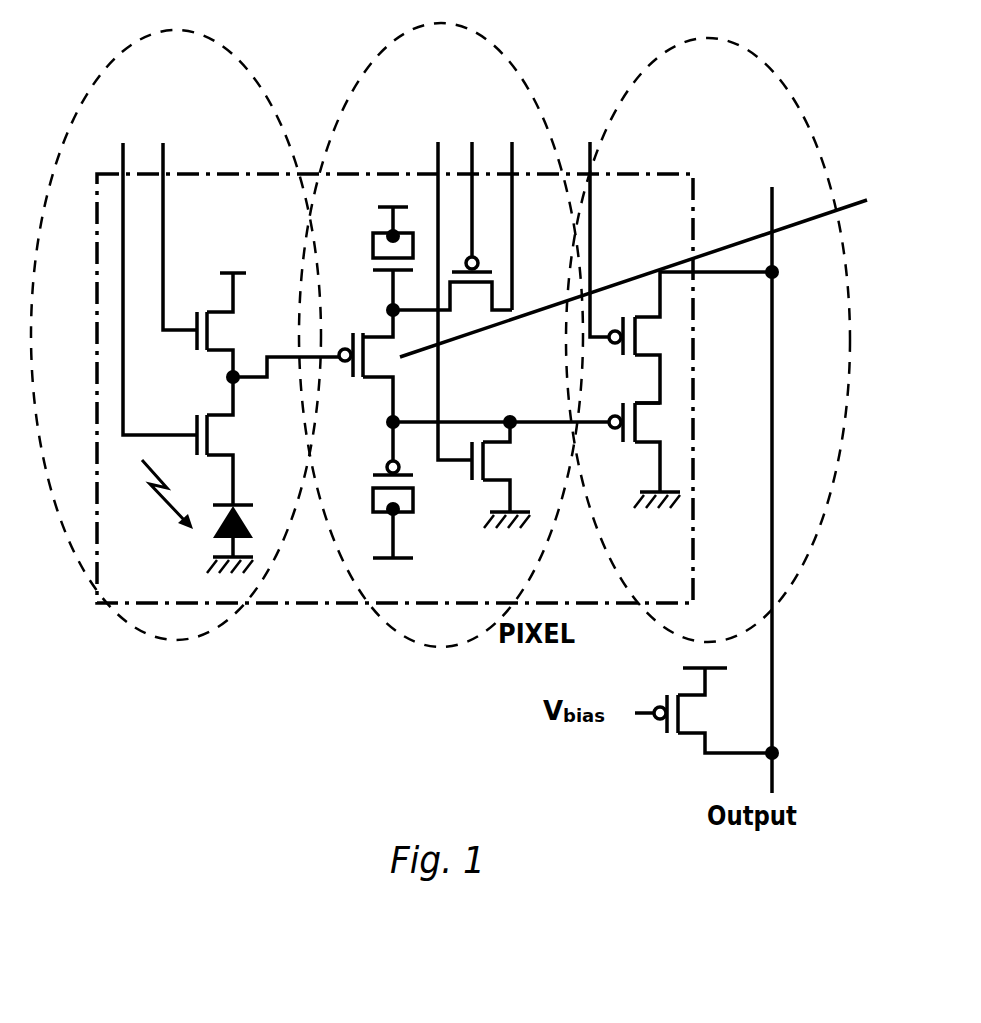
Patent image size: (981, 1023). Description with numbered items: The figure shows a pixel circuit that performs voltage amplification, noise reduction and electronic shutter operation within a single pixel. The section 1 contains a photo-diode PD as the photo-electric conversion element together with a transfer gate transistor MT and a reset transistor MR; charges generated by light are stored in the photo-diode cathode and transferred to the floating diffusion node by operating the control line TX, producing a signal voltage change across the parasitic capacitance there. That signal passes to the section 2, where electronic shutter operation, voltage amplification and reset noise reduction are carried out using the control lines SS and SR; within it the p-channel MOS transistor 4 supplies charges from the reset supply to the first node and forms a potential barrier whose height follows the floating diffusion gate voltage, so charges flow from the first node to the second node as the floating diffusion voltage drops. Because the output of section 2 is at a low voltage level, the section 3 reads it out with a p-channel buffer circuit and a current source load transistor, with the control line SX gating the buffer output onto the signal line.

The photo-diode section 1 is at (150, 650).
The signal processing section 2 is at (425, 635).
The readout section 3 is at (840, 472).
The p-channel MOS transistor 4 is at (648, 269).